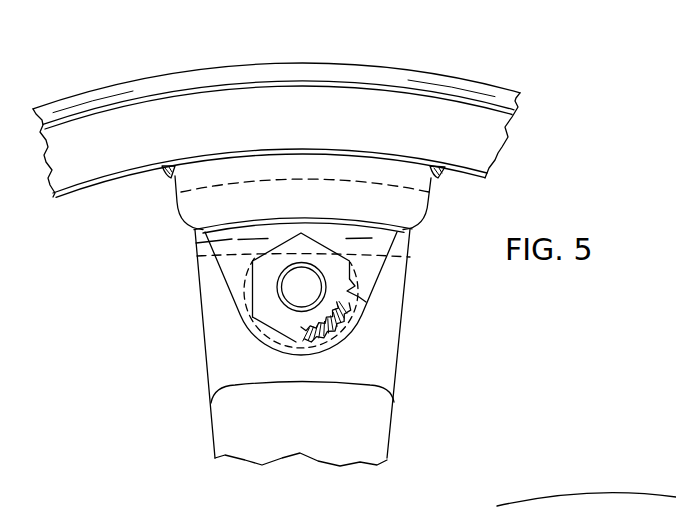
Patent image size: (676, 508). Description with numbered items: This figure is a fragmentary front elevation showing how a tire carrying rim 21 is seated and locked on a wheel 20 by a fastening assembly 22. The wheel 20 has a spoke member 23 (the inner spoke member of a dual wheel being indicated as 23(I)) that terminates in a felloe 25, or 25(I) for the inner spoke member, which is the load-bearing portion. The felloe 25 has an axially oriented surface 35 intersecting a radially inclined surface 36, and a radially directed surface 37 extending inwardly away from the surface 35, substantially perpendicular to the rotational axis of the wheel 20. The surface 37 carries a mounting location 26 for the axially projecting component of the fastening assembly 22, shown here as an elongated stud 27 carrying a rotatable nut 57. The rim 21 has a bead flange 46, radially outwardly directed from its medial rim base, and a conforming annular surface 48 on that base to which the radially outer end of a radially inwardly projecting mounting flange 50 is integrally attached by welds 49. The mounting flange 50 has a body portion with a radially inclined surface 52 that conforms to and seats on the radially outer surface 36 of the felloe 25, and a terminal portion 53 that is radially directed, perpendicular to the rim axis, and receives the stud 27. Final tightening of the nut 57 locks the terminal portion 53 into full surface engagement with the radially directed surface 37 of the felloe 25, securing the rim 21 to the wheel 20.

The wheel 20 is at (206, 445).
The tire carrying rim 21 is at (427, 53).
The fastening assembly 22 is at (241, 305).
The spoke member 23 is at (301, 454).
The felloe 25 is at (417, 314).
The mounting location 26 is at (292, 298).
The stud 27 is at (329, 298).
The axially oriented surface 35 is at (410, 257).
The radially inclined surface 36 is at (412, 247).
The radially directed surface 37 is at (328, 322).
The bead flange 46 is at (340, 64).
The conforming annular surface 48 is at (98, 184).
The weld 49 is at (164, 180).
The mounting flange 50 is at (430, 212).
The radially inclined surface 52 is at (196, 252).
The terminal portion 53 is at (291, 356).
The nut 57 is at (318, 250).